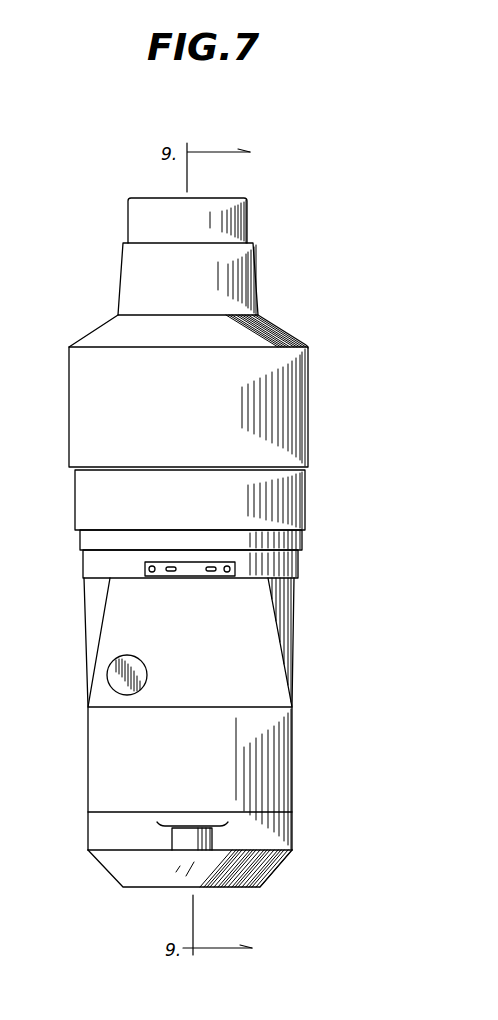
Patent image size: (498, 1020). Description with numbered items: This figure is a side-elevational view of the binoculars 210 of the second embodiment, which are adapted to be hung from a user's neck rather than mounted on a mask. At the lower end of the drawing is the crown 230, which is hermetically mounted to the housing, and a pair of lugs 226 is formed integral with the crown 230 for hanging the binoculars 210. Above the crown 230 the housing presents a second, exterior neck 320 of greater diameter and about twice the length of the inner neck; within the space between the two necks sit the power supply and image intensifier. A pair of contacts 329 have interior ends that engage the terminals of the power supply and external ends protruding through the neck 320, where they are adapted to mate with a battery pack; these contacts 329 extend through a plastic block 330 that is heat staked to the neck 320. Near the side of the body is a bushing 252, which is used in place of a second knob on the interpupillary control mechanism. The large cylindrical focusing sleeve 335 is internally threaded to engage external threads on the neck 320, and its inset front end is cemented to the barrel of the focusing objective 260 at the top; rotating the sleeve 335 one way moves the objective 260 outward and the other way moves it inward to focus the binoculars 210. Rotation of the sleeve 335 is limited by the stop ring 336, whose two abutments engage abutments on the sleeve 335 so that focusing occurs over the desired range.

The binoculars 210 is at (350, 187).
The focusing objective 260 is at (247, 218).
The focusing sleeve 335 is at (305, 378).
The stop ring 336 is at (303, 538).
The exterior neck 320 is at (298, 563).
The plastic block 330 is at (145, 578).
The contacts 329 is at (210, 575).
The bushing 252 is at (115, 676).
The crown 230 is at (275, 872).
The lugs 226 is at (178, 835).